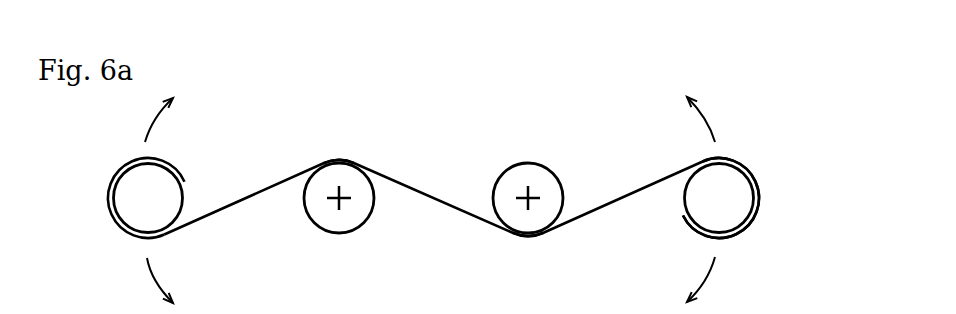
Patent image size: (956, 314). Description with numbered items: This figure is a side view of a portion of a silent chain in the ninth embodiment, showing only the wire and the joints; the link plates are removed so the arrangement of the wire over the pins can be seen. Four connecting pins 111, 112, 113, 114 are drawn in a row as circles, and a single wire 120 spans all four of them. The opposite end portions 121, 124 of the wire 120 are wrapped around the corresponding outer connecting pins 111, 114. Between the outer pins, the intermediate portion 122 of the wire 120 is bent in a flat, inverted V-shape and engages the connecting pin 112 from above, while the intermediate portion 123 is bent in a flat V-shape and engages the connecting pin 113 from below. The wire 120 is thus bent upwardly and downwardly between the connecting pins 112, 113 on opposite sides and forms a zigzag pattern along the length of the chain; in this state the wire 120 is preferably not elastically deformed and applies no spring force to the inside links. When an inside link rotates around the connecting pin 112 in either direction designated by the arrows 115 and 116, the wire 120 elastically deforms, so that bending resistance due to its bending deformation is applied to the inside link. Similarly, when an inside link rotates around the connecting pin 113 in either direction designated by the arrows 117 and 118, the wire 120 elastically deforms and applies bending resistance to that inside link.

The connecting pin 111 is at (132, 208).
The connecting pin 112 is at (350, 178).
The connecting pin 113 is at (533, 177).
The connecting pin 114 is at (723, 205).
The arrow 115 is at (172, 120).
The arrow 116 is at (144, 280).
The arrow 117 is at (719, 119).
The arrow 118 is at (720, 279).
The wire 120 is at (233, 207).
The end portion 121 is at (120, 168).
The intermediate portion 122 is at (328, 157).
The intermediate portion 123 is at (527, 238).
The end portion 124 is at (753, 167).